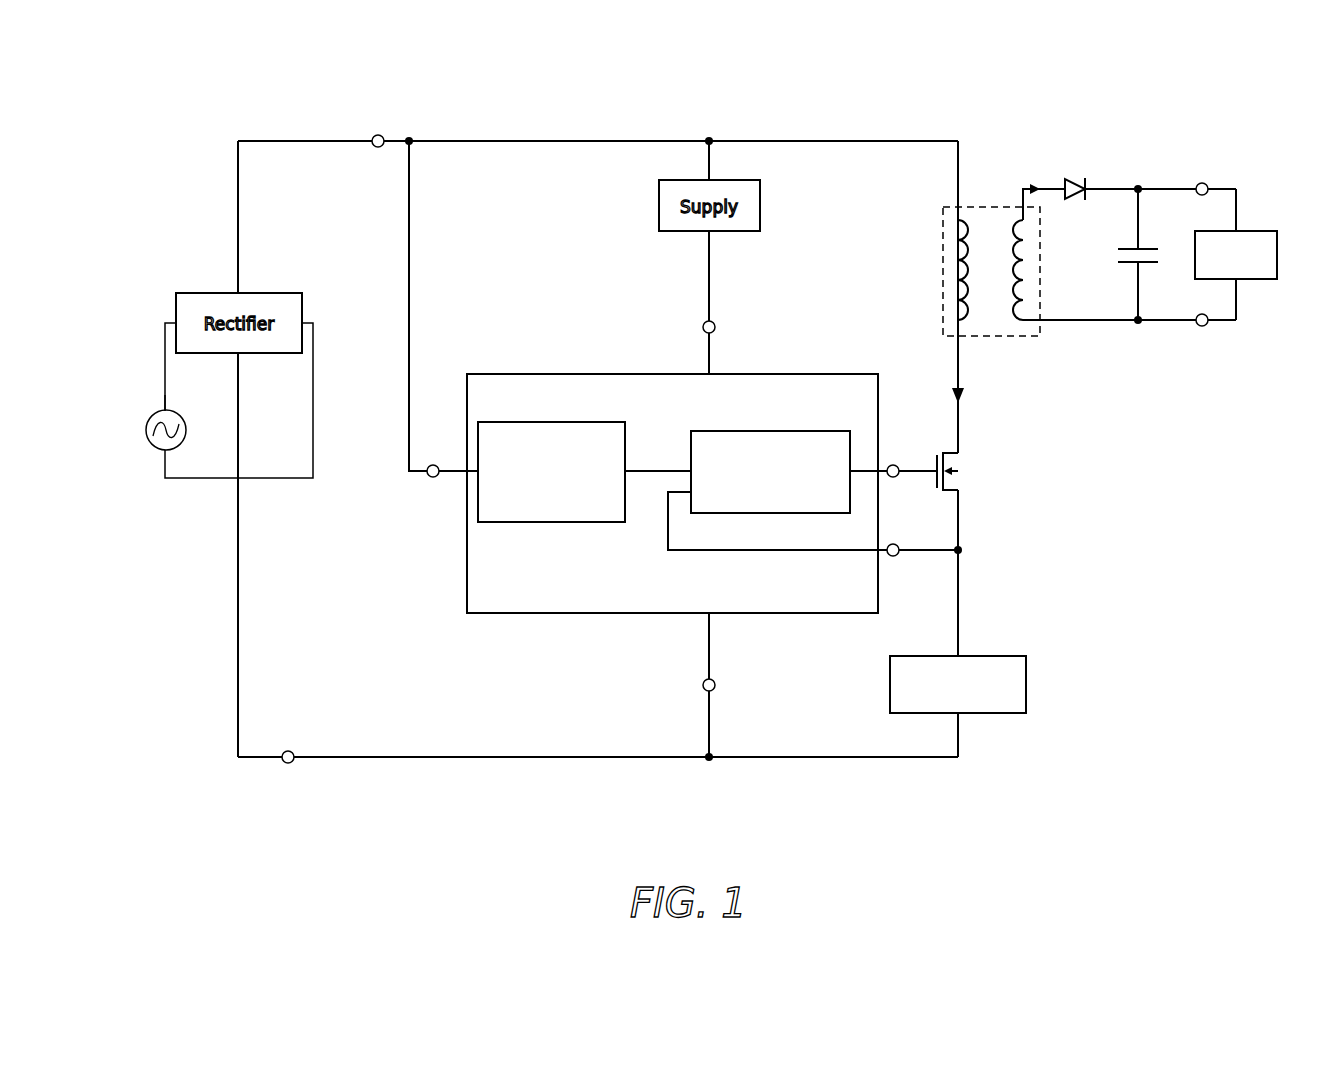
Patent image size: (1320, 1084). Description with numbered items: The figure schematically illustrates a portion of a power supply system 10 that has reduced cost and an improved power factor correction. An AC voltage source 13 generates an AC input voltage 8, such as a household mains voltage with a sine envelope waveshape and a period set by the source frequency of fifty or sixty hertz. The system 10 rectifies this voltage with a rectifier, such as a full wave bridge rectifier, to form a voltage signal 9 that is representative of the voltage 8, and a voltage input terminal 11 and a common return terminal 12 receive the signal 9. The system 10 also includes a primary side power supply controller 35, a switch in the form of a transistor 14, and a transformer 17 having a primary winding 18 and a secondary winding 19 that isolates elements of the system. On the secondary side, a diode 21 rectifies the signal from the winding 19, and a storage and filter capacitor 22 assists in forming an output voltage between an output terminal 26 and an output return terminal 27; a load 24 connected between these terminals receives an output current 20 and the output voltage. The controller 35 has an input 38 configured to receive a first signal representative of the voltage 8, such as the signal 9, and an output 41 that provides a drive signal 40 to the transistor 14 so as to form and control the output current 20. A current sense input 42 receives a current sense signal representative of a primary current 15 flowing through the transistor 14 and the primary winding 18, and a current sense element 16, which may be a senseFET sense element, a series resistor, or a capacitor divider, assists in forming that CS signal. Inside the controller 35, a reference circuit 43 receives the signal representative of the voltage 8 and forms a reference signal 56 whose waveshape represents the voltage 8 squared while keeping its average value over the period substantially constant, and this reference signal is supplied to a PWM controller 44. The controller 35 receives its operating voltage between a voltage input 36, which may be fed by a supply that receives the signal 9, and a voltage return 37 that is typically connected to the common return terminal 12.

The AC input voltage 8 is at (166, 398).
The voltage signal 9 is at (288, 142).
The power supply system 10 is at (882, 857).
The voltage input terminal 11 is at (379, 134).
The common return terminal 12 is at (289, 764).
The AC voltage source 13 is at (148, 443).
The transistor 14 is at (962, 468).
The primary current 15 is at (966, 398).
The current sense element 16 is at (1000, 656).
The transformer 17 is at (1015, 336).
The primary winding 18 is at (962, 262).
The secondary winding 19 is at (1022, 266).
The output current 20 is at (1032, 183).
The diode 21 is at (1076, 180).
The storage and filter capacitor 22 is at (1130, 264).
The load 24 is at (1262, 231).
The output terminal 26 is at (1206, 183).
The output return terminal 27 is at (1206, 327).
The primary side power supply controller 35 is at (513, 374).
The voltage input 36 is at (714, 322).
The voltage return 37 is at (716, 686).
The input 38 is at (432, 478).
The drive signal 40 is at (867, 470).
The output 41 is at (896, 478).
The current sense input 42 is at (896, 557).
The reference circuit 43 is at (531, 422).
The PWM controller 44 is at (757, 431).
The reference signal 56 is at (683, 461).